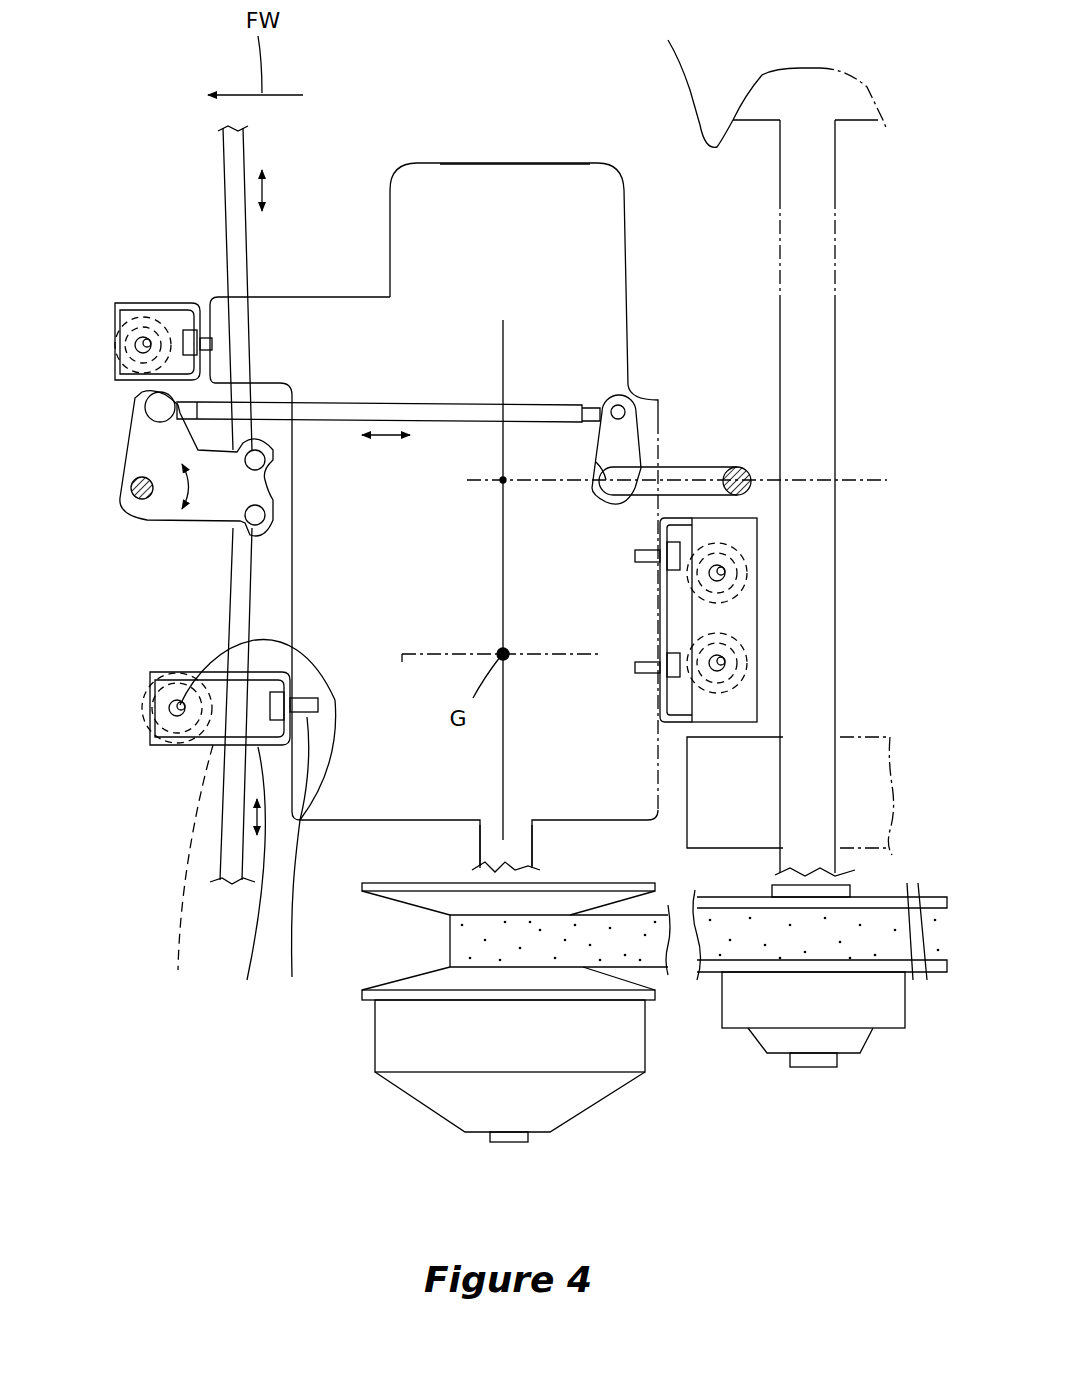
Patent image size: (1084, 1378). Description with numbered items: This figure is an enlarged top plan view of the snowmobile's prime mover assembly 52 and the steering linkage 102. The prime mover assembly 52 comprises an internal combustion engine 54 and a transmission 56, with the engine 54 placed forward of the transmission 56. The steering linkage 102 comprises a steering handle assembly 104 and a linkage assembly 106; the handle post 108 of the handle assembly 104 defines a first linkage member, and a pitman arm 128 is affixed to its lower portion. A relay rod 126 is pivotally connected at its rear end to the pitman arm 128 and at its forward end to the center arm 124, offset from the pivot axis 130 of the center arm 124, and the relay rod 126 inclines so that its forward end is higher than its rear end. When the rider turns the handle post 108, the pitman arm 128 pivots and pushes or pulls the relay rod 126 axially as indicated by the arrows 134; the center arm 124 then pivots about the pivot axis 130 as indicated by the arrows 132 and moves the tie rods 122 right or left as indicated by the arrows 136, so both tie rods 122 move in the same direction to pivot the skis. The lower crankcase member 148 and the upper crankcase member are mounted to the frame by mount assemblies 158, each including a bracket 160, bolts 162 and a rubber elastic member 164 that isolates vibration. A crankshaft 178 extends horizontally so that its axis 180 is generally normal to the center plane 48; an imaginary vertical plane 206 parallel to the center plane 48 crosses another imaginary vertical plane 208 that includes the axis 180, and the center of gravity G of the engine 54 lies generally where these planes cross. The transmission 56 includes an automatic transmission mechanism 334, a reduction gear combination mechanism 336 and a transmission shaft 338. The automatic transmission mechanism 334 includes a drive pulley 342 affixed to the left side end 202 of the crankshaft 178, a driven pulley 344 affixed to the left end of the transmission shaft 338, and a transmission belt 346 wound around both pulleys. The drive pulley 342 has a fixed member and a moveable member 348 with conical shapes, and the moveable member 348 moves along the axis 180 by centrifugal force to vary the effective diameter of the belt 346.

The prime mover assembly 52 is at (422, 120).
The internal combustion engine 54 is at (505, 155).
The reduction gear combination mechanism 336 is at (766, 80).
The arrows 136 is at (267, 190).
The mount assemblies 158 is at (165, 300).
The tie rods 122 is at (252, 275).
The steering linkage 102 is at (408, 367).
The linkage assembly 106 is at (465, 398).
The relay rod 126 is at (565, 400).
The steering handle assembly 104 is at (693, 403).
The handle post 108 is at (712, 460).
The center plane 48 is at (828, 478).
The transmission shaft 338 is at (780, 313).
The pitman arm 128 is at (598, 462).
The center arm 124 is at (258, 482).
The arrows 134 is at (387, 437).
The pivot axis 130 is at (133, 503).
The arrows 132 is at (200, 490).
The imaginary vertical plane 206 is at (402, 662).
The crankshaft axis 180 is at (507, 775).
The imaginary vertical plane 208 is at (589, 756).
The crankshaft 178 is at (478, 843).
The left side end of the crankshaft 202 is at (500, 875).
The lower crankcase member 148 is at (267, 790).
The bolts 162 is at (303, 865).
The bracket 160 is at (247, 886).
The elastic member 164 is at (182, 881).
The transmission 56 is at (514, 1034).
The drive pulley 342 is at (463, 980).
The transmission belt 346 is at (433, 900).
The moveable member 348 is at (547, 977).
The automatic transmission mechanism 334 is at (597, 1110).
The driven pulley 344 is at (787, 970).